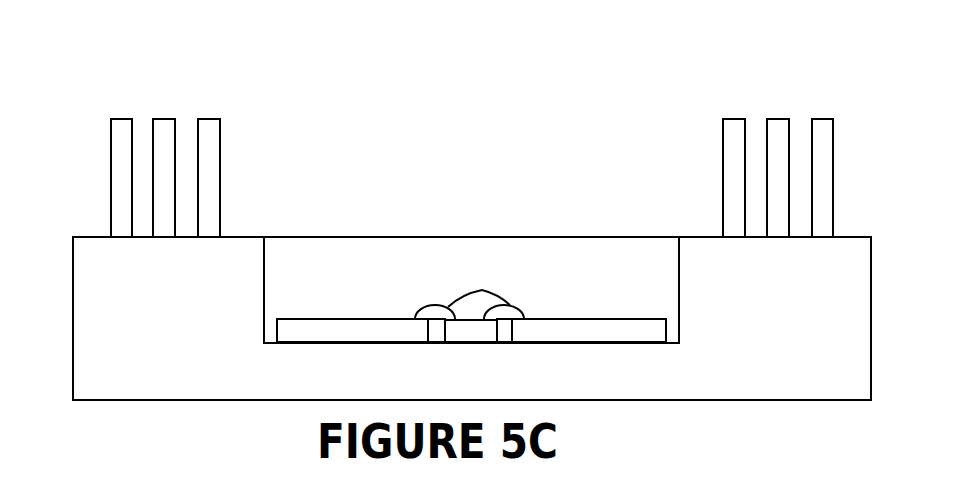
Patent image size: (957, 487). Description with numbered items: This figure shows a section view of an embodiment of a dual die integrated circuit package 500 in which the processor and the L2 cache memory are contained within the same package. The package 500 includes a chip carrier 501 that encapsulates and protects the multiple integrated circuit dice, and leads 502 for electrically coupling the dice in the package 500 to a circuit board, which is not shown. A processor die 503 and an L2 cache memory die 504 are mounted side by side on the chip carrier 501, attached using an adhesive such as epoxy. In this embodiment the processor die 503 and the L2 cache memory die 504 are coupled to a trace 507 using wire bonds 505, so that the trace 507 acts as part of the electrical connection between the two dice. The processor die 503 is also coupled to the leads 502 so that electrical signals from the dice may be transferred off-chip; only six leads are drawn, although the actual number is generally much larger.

The package 500 is at (105, 77).
The chip carrier 501 is at (418, 351).
The leads 502 is at (839, 117).
The processor die 503 is at (388, 317).
The L2 cache memory die 504 is at (572, 316).
The wirebond 505 is at (481, 289).
The trace 507 is at (488, 343).